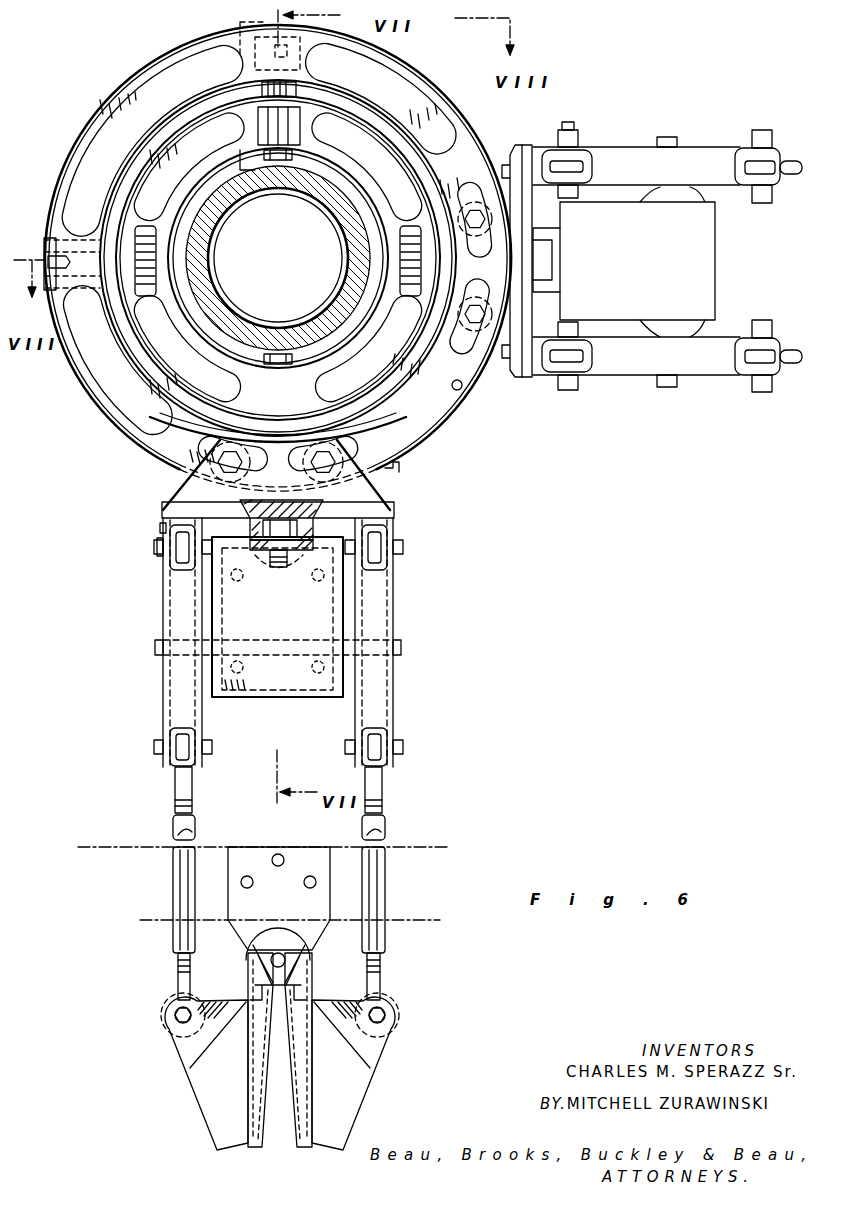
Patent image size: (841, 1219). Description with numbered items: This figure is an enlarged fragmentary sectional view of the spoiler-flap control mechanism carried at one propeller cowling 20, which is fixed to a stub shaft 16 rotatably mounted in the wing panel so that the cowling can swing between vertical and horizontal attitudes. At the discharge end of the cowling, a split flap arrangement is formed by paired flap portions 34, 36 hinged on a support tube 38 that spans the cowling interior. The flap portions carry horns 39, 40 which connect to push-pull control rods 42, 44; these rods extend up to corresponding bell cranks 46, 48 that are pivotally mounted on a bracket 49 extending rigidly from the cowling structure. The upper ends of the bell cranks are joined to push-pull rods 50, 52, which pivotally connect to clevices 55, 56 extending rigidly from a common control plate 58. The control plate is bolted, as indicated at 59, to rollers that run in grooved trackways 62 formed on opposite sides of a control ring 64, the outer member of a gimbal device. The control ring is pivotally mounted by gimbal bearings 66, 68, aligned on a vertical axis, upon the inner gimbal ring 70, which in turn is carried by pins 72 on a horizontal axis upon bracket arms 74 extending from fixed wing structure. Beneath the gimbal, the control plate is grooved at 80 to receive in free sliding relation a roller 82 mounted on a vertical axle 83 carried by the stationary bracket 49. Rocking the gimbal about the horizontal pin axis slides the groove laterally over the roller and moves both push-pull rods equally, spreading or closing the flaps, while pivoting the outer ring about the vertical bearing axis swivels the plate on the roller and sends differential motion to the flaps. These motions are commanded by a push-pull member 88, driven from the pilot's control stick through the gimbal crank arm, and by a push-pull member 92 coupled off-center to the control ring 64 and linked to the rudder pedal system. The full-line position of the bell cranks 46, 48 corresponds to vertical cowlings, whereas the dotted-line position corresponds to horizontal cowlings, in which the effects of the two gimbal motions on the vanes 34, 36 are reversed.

The stub shaft 16 is at (347, 258).
The propeller cowling 20 is at (428, 846).
The flap portion 34 is at (297, 1147).
The flap portion 36 is at (262, 1147).
The support tube 38 is at (300, 964).
The horn 39 is at (357, 1100).
The horn 40 is at (205, 1108).
The push-pull control rod 42 is at (386, 944).
The push-pull control rod 44 is at (172, 950).
The bell crank 46 is at (394, 693).
The bell crank 48 is at (164, 693).
The bracket 49 is at (286, 628).
The push-pull rod 50 is at (394, 534).
The push-pull rod 52 is at (160, 530).
The clevis 55 is at (396, 516).
The clevis 56 is at (162, 514).
The control plate 58 is at (376, 482).
The bolts 59 is at (344, 462).
The grooved trackway 62 is at (461, 389).
The control ring 64 is at (112, 428).
The gimbal bearing 66 is at (288, 364).
The gimbal bearing 68 is at (282, 161).
The inner gimbal ring 70 is at (370, 190).
The pin 72 is at (436, 260).
The bracket arm 74 is at (146, 226).
The groove 80 is at (305, 526).
The roller 82 is at (262, 528).
The vertical axle 83 is at (284, 566).
The push-pull member 88 is at (228, 30).
The push-pull member 92 is at (46, 238).